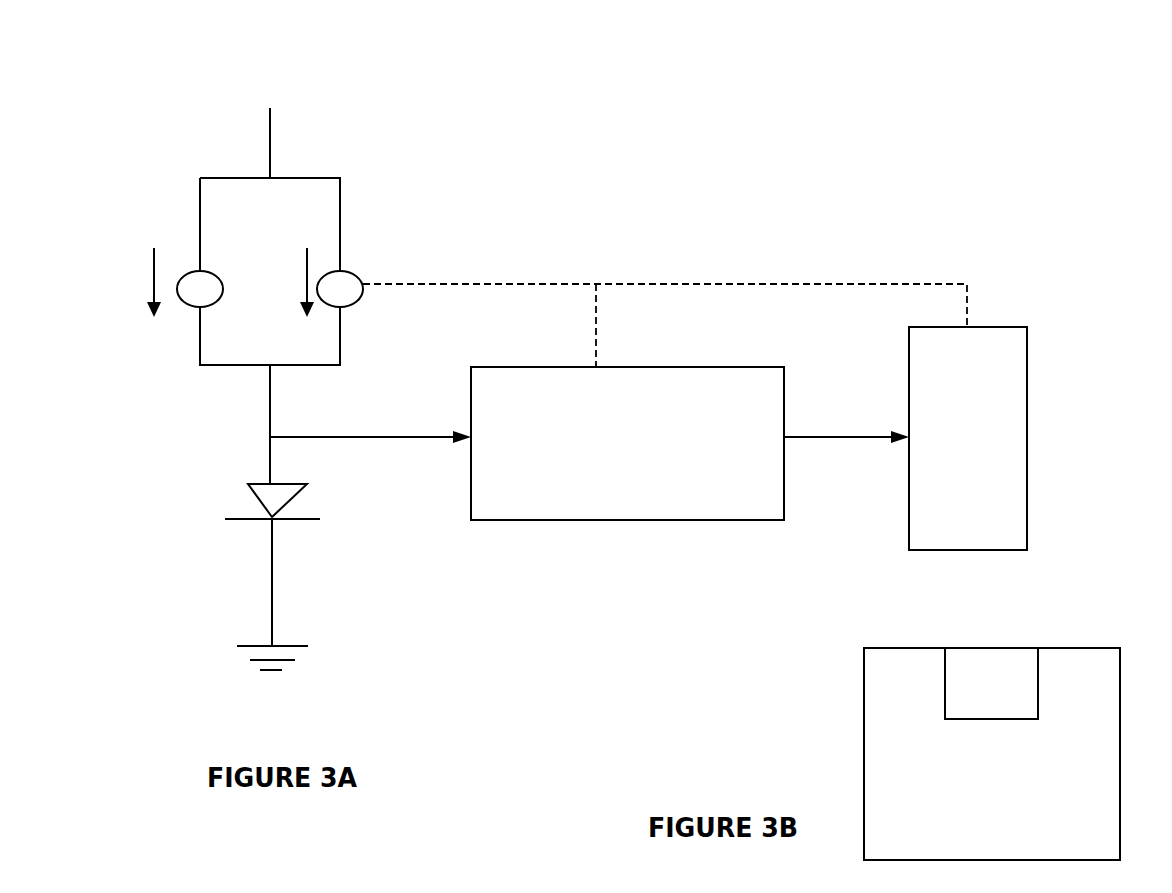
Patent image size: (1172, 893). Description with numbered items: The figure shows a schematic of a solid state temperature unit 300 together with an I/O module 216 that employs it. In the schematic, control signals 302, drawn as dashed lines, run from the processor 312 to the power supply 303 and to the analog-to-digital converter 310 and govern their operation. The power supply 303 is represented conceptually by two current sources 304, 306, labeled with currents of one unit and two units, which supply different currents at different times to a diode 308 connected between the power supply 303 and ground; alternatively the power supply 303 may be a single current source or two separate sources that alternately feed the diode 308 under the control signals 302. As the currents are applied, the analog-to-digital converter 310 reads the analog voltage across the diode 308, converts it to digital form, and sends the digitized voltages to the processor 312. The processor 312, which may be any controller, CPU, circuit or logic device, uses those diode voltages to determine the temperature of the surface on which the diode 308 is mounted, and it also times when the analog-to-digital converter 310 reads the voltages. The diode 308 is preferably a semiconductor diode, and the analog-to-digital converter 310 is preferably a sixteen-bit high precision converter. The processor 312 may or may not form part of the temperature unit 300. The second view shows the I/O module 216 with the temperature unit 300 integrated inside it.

In FIG. 3A, the temperature unit 300 is at (829, 152).
In FIG. 3B, the temperature unit 300 is at (1007, 695).
In FIG. 3A, the control signals 302 is at (699, 283).
In FIG. 3A, the power supply 303 is at (350, 141).
In FIG. 3A, the current source 304 is at (355, 272).
In FIG. 3A, the current source 306 is at (186, 307).
In FIG. 3A, the diode 308 is at (332, 493).
In FIG. 3A, the analog-to-digital converter 310 is at (632, 522).
In FIG. 3A, the processor 312 is at (1027, 444).
In FIG. 3B, the I/O module 216 is at (864, 755).